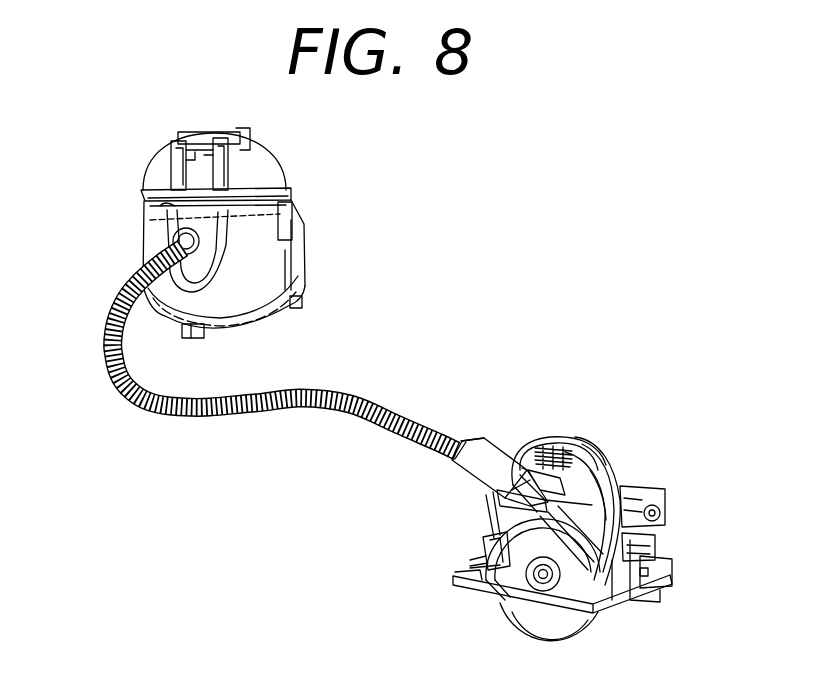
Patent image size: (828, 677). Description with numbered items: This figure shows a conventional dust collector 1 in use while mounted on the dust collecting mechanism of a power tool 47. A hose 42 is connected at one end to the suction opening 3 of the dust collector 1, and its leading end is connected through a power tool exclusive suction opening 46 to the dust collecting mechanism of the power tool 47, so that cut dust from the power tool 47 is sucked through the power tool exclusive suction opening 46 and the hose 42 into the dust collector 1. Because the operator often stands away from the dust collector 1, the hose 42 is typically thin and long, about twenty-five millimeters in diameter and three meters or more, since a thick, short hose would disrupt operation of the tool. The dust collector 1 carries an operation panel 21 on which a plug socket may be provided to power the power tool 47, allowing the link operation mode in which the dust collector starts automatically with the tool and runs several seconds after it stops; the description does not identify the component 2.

The dust collector 1 is at (284, 166).
The operation panel 21 is at (185, 168).
The dust collecting tank 2 is at (243, 284).
The suction opening 3 is at (168, 230).
The hose 42 is at (310, 388).
The power tool exclusive suction opening 46 is at (488, 445).
The power tool 47 is at (487, 528).